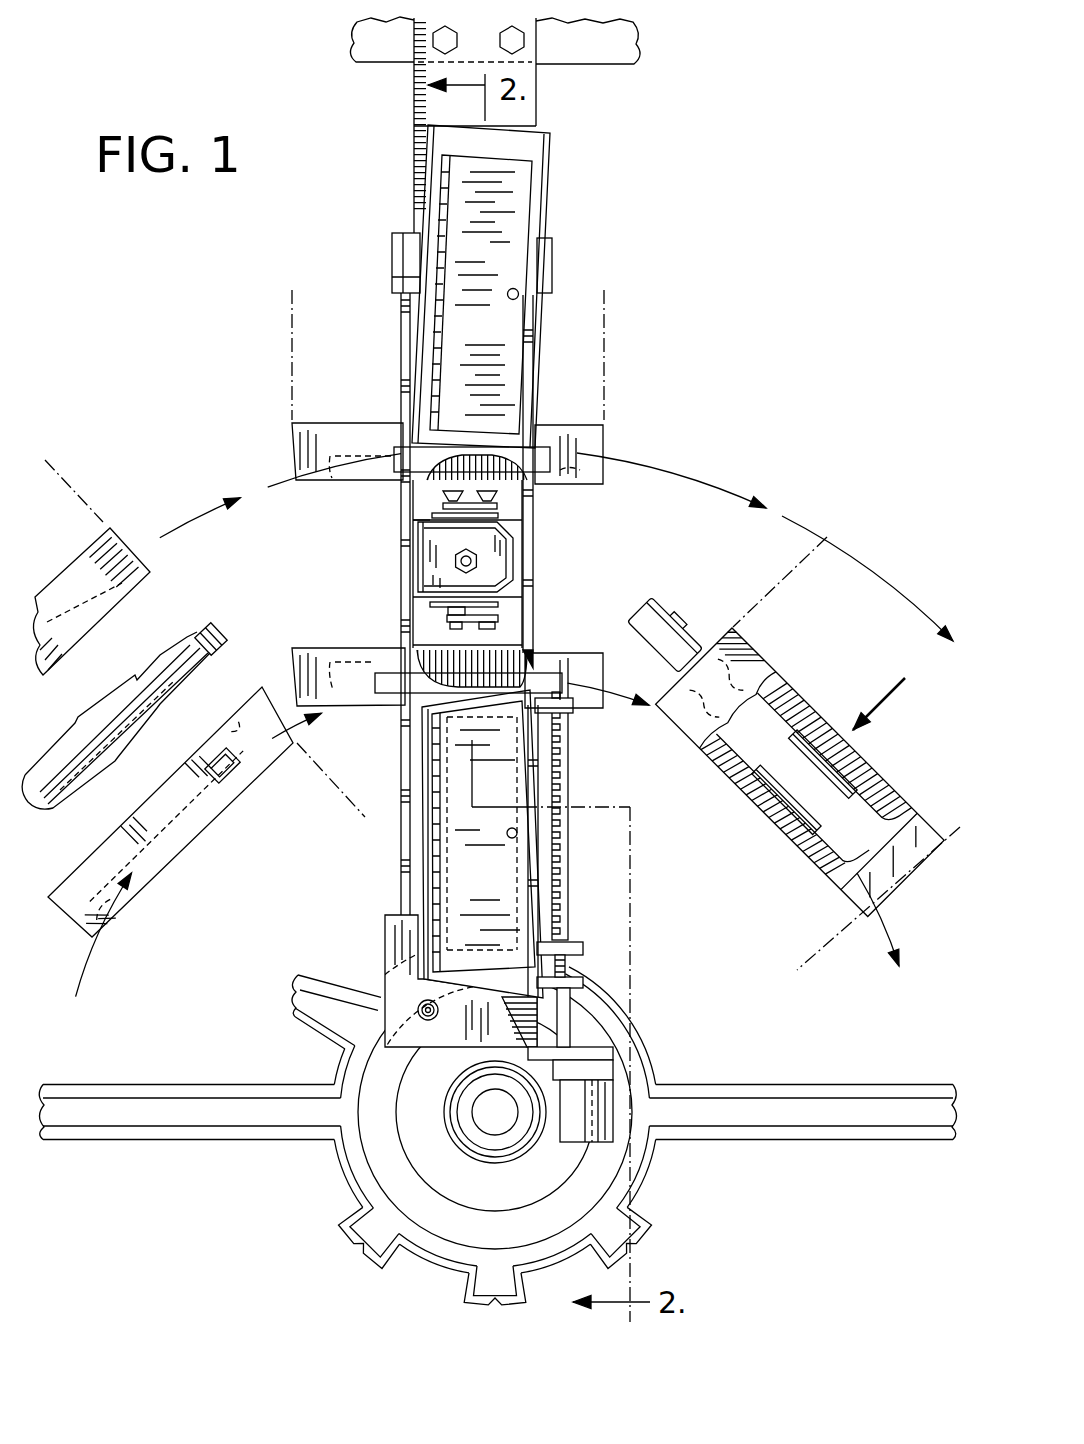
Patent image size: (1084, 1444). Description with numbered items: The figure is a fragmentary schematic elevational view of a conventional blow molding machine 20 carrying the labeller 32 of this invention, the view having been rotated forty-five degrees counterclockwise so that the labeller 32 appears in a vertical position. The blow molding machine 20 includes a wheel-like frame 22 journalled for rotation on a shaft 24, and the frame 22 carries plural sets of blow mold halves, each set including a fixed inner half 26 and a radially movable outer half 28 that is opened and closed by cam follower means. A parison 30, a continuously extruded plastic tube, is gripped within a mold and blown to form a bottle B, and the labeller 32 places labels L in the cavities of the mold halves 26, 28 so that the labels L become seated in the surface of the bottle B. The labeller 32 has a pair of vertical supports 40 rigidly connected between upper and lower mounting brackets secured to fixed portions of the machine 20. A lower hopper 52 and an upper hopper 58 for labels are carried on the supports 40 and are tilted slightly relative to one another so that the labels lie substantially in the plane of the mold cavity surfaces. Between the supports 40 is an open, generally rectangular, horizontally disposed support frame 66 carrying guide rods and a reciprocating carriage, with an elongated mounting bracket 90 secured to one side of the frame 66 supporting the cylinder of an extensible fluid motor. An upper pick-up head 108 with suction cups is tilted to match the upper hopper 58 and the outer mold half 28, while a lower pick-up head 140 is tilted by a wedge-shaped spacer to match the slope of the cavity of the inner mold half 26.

The blow molding machine 20 is at (497, 1136).
The wheel-like frame 22 is at (792, 1140).
The shaft 24 is at (495, 1108).
The fixed inner mold half 26 is at (202, 828).
The radially movable outer mold half 28 is at (603, 436).
The parison 30 is at (677, 625).
The labeller 32 is at (476, 564).
The vertical supports 40 is at (530, 507).
The lower hopper 52 is at (533, 853).
The upper hopper 58 is at (549, 195).
The support frame 66 is at (411, 527).
The mounting bracket 90 is at (500, 552).
The upper pick-up head 108 is at (441, 497).
The lower pick-up head 140 is at (503, 620).
The bottle B is at (167, 650).
The labels L is at (117, 683).